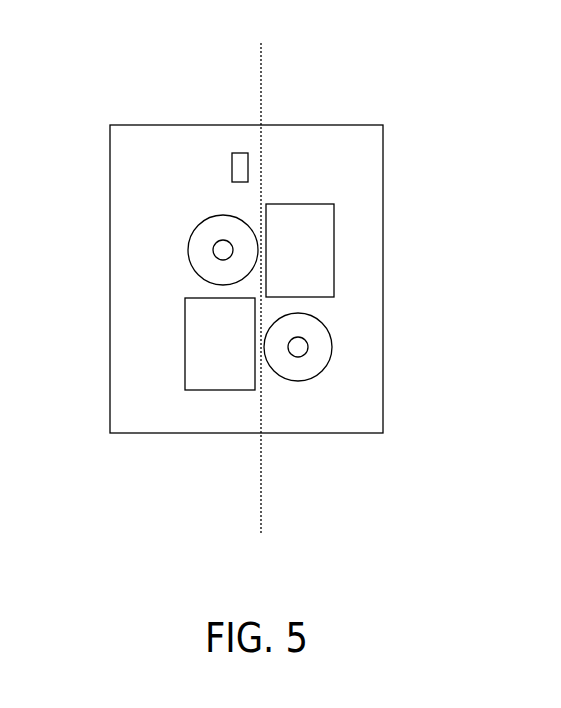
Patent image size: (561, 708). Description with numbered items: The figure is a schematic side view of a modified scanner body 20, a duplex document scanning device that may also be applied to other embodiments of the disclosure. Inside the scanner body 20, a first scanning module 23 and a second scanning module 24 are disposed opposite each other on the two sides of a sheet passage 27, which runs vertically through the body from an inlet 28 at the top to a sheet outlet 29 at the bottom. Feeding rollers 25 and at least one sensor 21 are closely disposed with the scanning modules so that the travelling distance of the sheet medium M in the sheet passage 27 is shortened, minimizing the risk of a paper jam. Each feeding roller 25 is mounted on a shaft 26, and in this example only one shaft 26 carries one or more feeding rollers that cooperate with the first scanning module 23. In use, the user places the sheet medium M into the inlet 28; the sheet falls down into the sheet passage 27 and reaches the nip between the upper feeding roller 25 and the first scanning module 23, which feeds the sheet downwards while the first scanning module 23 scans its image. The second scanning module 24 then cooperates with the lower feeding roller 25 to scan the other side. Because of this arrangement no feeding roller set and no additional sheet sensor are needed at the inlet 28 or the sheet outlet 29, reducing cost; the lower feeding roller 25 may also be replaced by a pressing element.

The sheet medium M is at (262, 57).
The scanner body 20 is at (384, 216).
The sensor 21 is at (232, 168).
The first scanning module 23 is at (334, 254).
The second scanning module 24 is at (192, 333).
The feeding roller 25 is at (198, 258).
The shaft 26 is at (213, 243).
The sheet passage 27 is at (266, 193).
The inlet 28 is at (265, 133).
The sheet outlet 29 is at (272, 417).